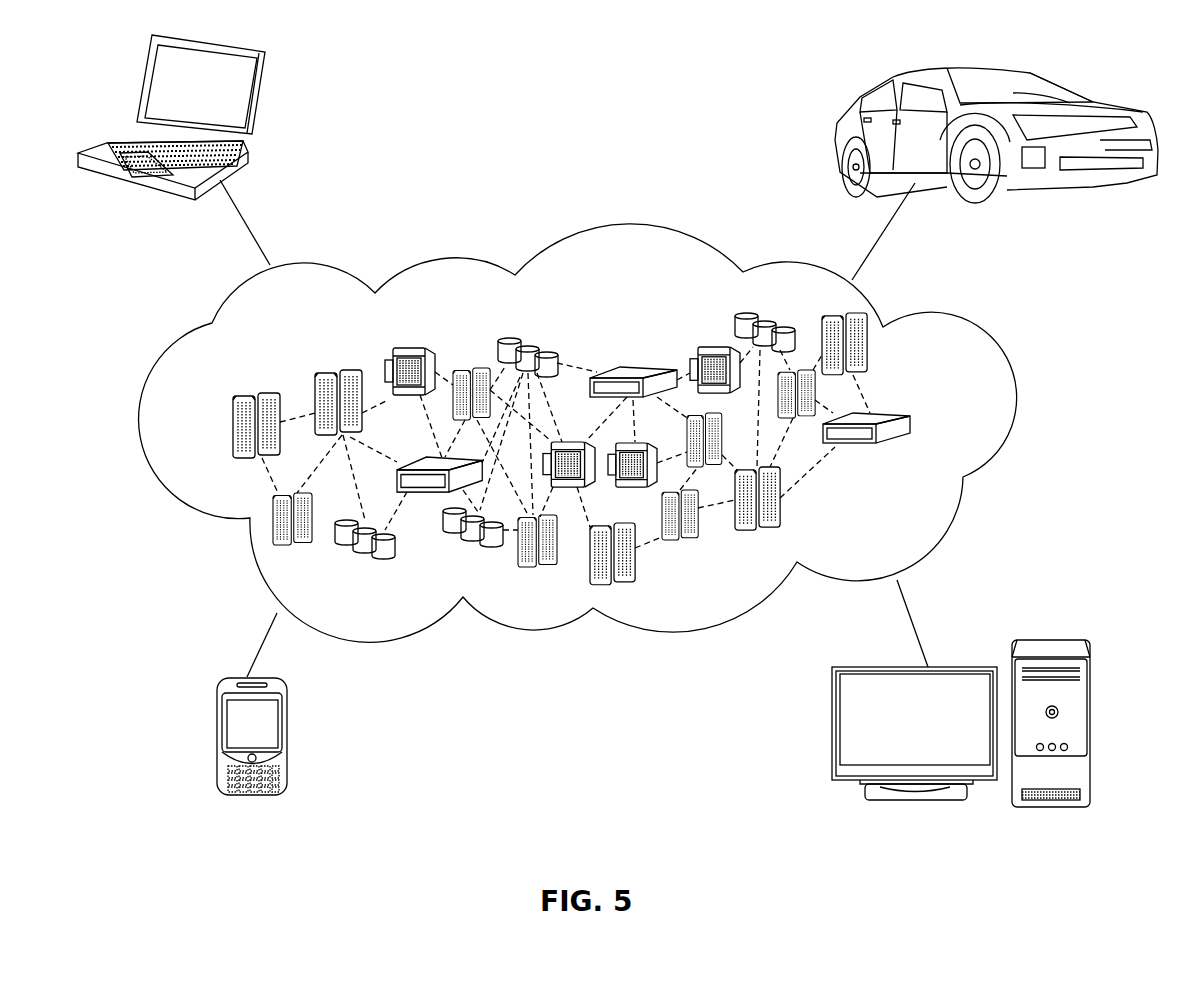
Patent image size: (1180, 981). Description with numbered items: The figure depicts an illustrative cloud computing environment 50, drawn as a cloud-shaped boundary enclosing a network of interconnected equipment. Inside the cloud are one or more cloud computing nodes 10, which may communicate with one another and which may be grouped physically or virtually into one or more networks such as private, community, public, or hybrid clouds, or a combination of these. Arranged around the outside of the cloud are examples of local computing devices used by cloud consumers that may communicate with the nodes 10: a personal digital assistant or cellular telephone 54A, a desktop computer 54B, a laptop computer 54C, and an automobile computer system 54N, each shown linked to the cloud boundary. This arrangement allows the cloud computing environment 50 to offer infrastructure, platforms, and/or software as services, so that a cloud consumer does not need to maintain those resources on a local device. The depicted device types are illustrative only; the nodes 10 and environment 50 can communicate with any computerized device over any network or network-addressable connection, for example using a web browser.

The cloud computing node 10 is at (950, 427).
The cloud computing environment 50 is at (970, 340).
The personal digital assistant or cellular telephone 54A is at (218, 740).
The desktop computer 54B is at (1053, 640).
The laptop computer 54C is at (257, 107).
The automobile computer system 54N is at (840, 116).